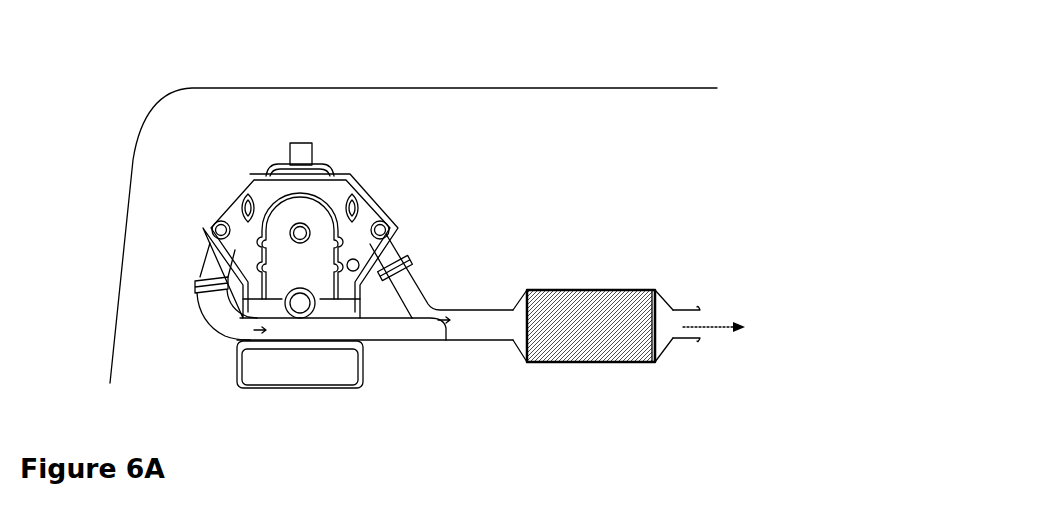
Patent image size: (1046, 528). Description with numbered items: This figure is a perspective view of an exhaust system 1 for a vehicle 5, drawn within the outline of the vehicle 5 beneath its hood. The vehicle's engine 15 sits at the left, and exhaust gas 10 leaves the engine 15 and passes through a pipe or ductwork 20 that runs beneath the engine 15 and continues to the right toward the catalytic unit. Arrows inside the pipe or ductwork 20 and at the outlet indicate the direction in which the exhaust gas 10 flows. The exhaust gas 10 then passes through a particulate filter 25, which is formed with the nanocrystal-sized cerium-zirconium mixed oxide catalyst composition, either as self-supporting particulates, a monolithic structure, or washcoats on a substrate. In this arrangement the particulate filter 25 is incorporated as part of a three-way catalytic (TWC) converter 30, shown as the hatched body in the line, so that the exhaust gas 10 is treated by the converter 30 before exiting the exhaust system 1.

The exhaust system 1 is at (617, 163).
The vehicle 5 is at (251, 111).
The exhaust gas 10 is at (407, 331).
The engine 15 is at (344, 188).
The pipe or ductwork 20 is at (353, 328).
The particulate filter 25 is at (592, 348).
The three-way catalytic converter 30 is at (681, 271).